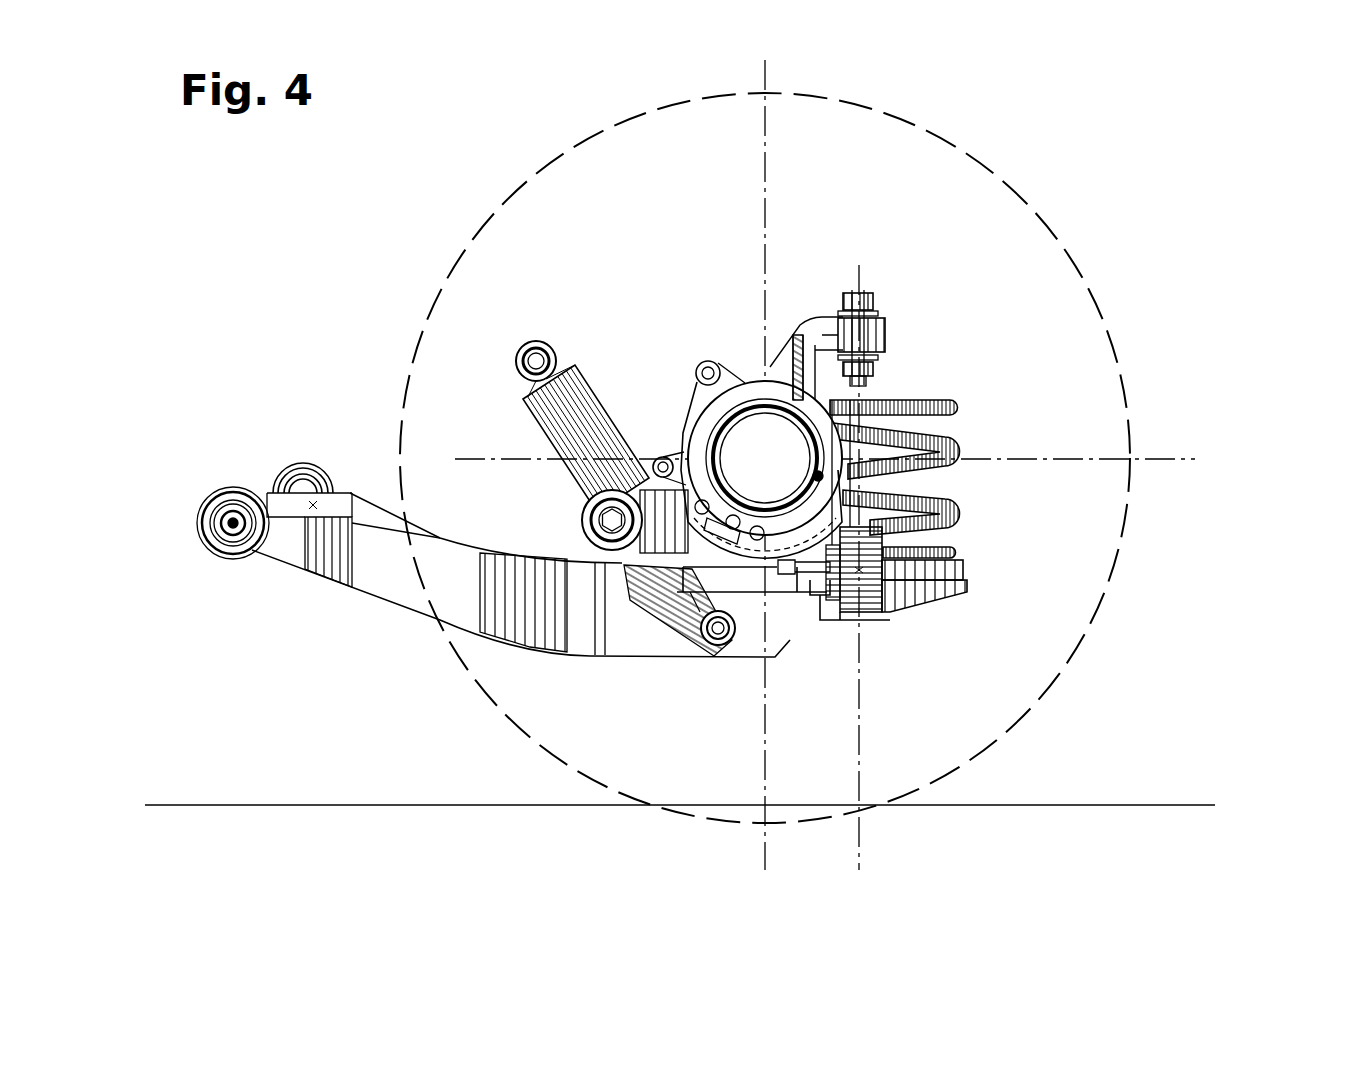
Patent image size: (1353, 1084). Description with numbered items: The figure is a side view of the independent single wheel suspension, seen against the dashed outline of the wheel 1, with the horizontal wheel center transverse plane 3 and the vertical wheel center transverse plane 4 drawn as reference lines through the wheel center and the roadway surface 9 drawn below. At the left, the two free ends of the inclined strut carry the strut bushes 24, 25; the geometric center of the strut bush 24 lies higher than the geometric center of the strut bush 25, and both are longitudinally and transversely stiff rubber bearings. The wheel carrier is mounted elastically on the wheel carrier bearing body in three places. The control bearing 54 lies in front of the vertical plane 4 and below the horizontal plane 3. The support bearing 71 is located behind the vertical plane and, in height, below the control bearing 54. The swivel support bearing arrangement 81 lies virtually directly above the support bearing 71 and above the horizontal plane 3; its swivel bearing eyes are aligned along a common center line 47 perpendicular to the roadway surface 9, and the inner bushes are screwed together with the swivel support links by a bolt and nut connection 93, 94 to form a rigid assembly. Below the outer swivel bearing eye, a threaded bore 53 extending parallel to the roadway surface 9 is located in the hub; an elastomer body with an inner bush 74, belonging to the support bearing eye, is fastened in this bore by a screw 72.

The wheel 1 is at (555, 760).
The horizontal wheel center transverse plane 3 is at (1140, 462).
The vertical wheel center transverse plane 4 is at (757, 763).
The roadway surface 9 is at (1103, 805).
The strut bush 24 is at (312, 507).
The strut bush 25 is at (222, 548).
The center line 47 is at (914, 610).
The threaded bore 53 is at (805, 597).
The control bearing 54 is at (622, 563).
The support bearing 71 is at (848, 623).
The screw 72 is at (899, 582).
The inner bush 74 is at (893, 580).
The swivel support bearing arrangement 81 is at (893, 336).
The bolt 93 is at (872, 303).
The nut 94 is at (873, 367).